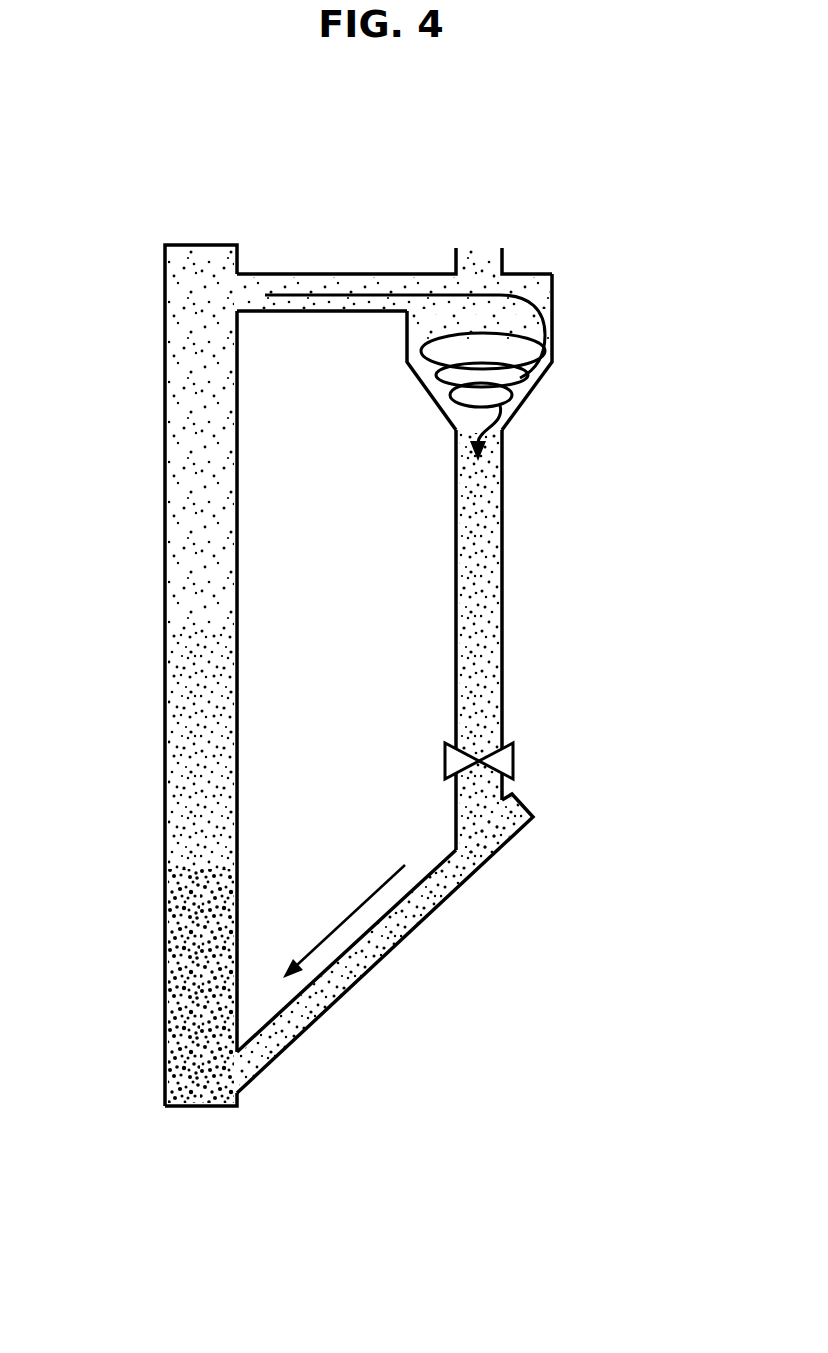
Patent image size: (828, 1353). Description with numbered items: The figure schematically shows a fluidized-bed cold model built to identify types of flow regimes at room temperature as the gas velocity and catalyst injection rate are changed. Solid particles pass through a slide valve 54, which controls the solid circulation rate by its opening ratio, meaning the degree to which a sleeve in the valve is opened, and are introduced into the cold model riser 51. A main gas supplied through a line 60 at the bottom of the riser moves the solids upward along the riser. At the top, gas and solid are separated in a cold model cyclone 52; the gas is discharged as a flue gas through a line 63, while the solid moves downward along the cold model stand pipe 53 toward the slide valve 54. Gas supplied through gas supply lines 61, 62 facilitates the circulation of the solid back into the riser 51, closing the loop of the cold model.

The cold model riser 51 is at (142, 698).
The cold model cyclone 52 is at (576, 337).
The cold model stand pipe 53 is at (530, 548).
The slide valve 54 is at (422, 760).
The line 60 is at (201, 1122).
The gas supply line 61 is at (526, 718).
The gas supply line 62 is at (542, 790).
The line 63 is at (480, 240).